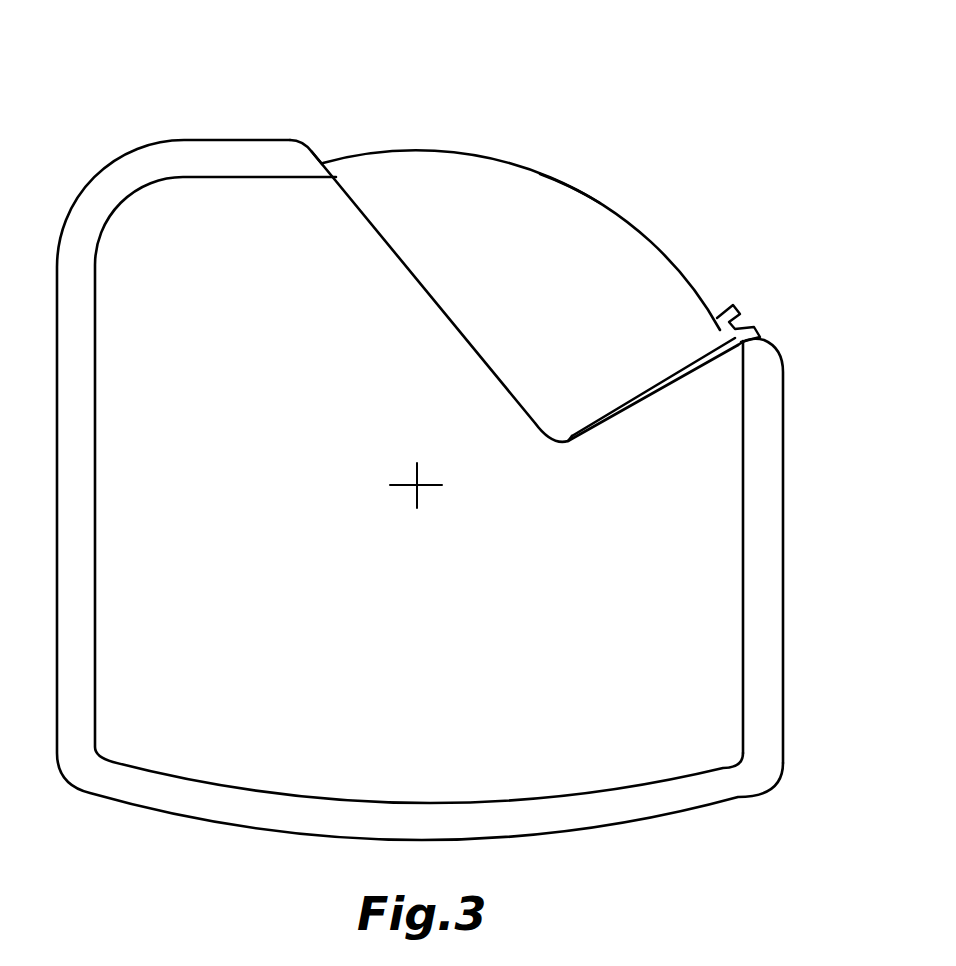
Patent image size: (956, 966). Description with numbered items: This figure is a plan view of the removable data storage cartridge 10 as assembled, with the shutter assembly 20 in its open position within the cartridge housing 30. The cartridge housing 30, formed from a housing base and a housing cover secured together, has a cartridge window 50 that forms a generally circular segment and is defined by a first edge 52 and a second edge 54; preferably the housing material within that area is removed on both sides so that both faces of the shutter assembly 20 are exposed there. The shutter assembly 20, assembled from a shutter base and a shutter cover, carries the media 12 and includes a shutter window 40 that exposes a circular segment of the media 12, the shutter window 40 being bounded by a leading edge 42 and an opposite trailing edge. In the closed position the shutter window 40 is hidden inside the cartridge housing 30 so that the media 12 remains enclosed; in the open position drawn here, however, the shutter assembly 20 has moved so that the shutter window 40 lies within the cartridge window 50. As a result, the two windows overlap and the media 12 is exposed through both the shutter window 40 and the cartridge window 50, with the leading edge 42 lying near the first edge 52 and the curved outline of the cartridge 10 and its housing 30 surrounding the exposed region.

The removable data storage cartridge 10 is at (223, 83).
The media 12 is at (533, 187).
The shutter assembly 20 is at (578, 188).
The cartridge housing 30 is at (787, 523).
The shutter window 40 is at (640, 383).
The leading edge 42 is at (670, 372).
The cartridge window 50 is at (368, 200).
The first edge 52 is at (700, 358).
The second edge 54 is at (345, 188).